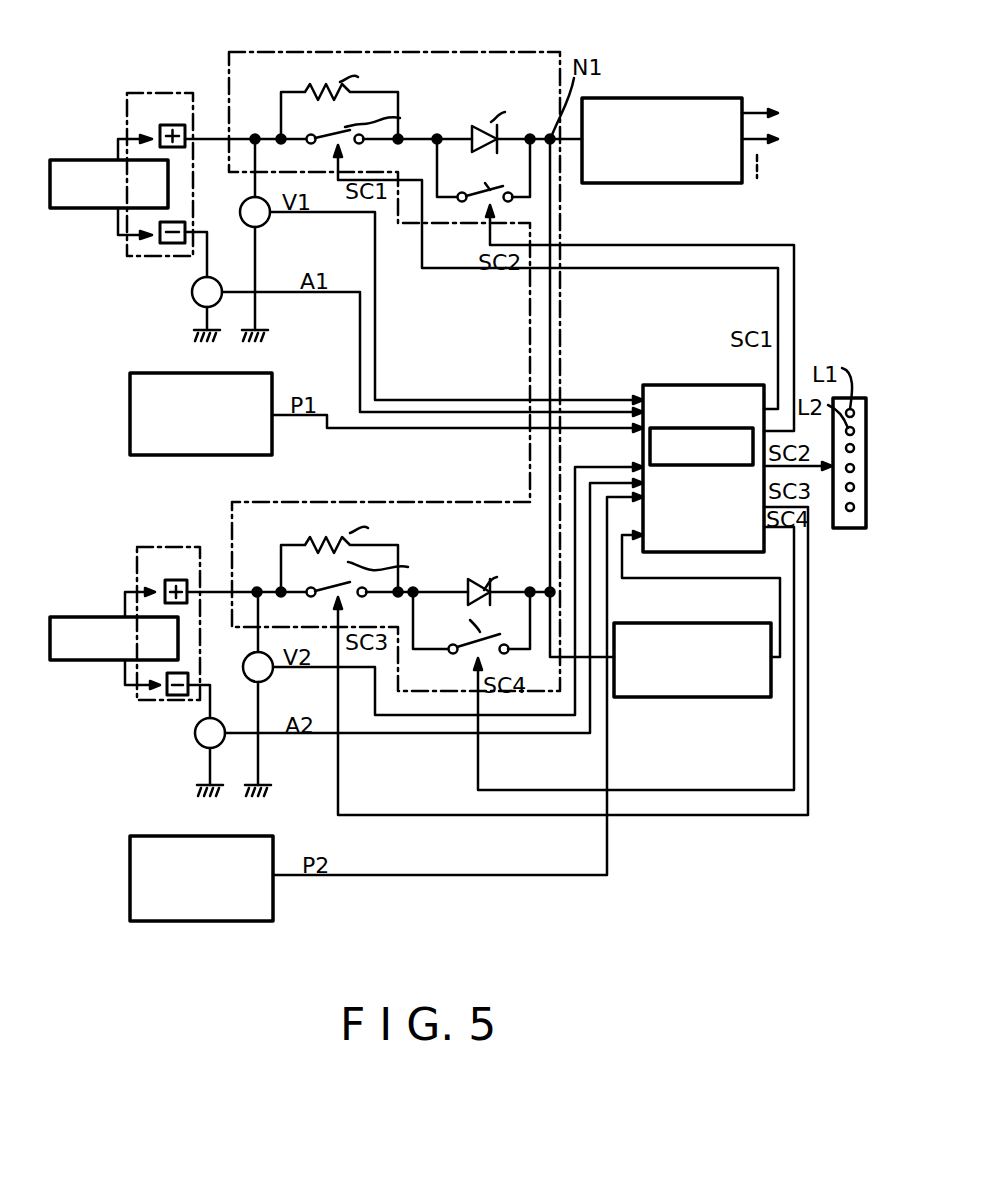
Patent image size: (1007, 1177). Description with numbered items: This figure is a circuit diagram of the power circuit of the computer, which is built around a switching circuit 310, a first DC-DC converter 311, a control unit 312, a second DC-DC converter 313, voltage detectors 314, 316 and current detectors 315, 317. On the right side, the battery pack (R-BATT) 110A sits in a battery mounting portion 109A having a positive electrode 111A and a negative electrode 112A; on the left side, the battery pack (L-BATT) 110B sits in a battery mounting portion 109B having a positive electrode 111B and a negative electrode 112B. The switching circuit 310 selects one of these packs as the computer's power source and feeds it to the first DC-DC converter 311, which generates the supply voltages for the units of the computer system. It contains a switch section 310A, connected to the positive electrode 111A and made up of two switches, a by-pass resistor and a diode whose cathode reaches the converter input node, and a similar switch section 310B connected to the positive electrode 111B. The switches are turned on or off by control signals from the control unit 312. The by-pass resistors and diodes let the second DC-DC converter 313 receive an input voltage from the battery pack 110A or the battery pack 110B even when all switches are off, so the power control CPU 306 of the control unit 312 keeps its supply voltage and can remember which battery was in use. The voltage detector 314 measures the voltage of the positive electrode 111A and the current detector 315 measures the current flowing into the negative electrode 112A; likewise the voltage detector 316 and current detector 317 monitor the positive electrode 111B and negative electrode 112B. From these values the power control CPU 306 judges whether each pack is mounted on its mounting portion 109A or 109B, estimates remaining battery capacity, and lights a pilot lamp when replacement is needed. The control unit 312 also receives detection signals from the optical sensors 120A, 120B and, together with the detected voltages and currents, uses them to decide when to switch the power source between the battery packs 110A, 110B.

The battery mounting portion 109A is at (152, 92).
The battery pack (R-BATT) 110A is at (88, 160).
The positive electrode 111A is at (178, 125).
The negative electrode 112A is at (188, 222).
The first voltage detector 314 is at (268, 222).
The first current detector 315 is at (192, 304).
The switching circuit 310 is at (455, 52).
The switch section 310A is at (483, 89).
The switch section 310B is at (495, 540).
The first DC-DC converter 311 is at (618, 98).
The control unit 312 is at (665, 385).
The power control CPU 306 is at (668, 428).
The second DC-DC converter 313 is at (725, 697).
The battery mounting portion 109B is at (148, 547).
The battery pack (L-BATT) 110B is at (80, 617).
The positive electrode 111B is at (190, 582).
The negative electrode 112B is at (178, 697).
The second voltage detector 316 is at (270, 678).
The second current detector 317 is at (205, 750).
The optical sensor 120A is at (130, 404).
The optical sensor 120B is at (130, 865).